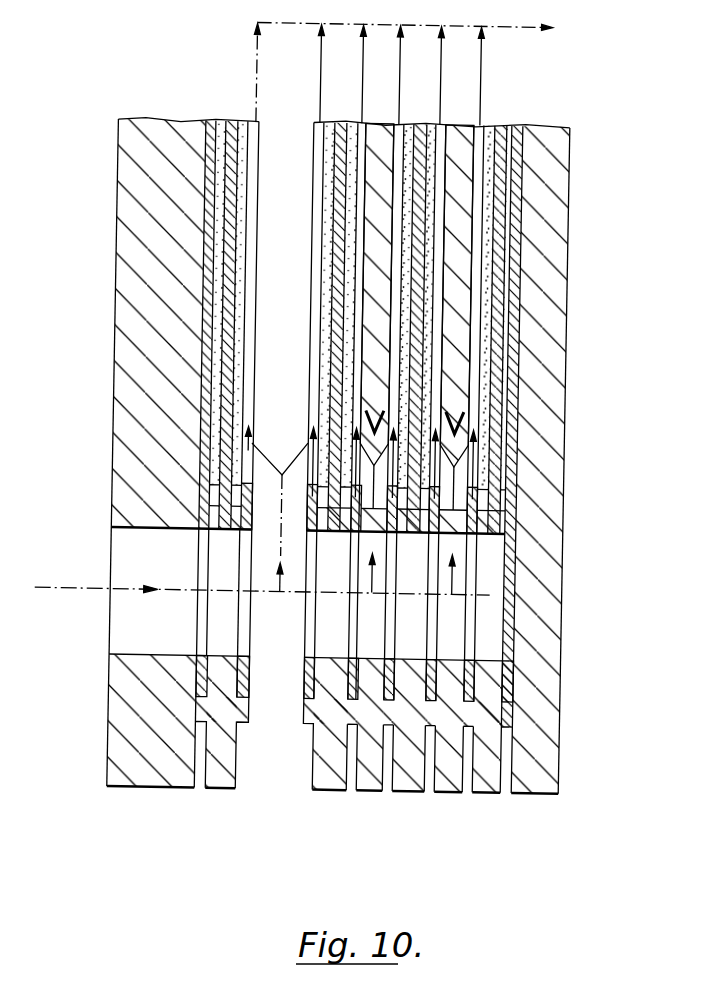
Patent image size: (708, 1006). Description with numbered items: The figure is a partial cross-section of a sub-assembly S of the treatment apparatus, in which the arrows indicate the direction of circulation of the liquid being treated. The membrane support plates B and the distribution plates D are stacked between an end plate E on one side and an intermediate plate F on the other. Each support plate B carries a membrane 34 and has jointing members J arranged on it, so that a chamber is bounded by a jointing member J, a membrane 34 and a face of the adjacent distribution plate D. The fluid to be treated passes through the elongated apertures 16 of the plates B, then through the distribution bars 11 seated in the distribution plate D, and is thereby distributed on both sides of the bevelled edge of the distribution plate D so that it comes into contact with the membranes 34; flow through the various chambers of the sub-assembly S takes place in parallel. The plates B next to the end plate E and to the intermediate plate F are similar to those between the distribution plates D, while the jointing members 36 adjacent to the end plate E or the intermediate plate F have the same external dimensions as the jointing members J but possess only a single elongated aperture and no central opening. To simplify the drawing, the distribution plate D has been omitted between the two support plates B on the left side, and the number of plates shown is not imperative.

The distribution bar 11 is at (461, 498).
The elongated aperture 16 is at (224, 577).
The membrane 34 is at (339, 137).
The jointing member 36 is at (209, 130).
The membrane support plate B is at (223, 778).
The distribution plate D is at (369, 778).
The end plate E is at (141, 722).
The intermediate plate F is at (560, 731).
The jointing member J is at (304, 681).
The sub-assembly S is at (579, 836).